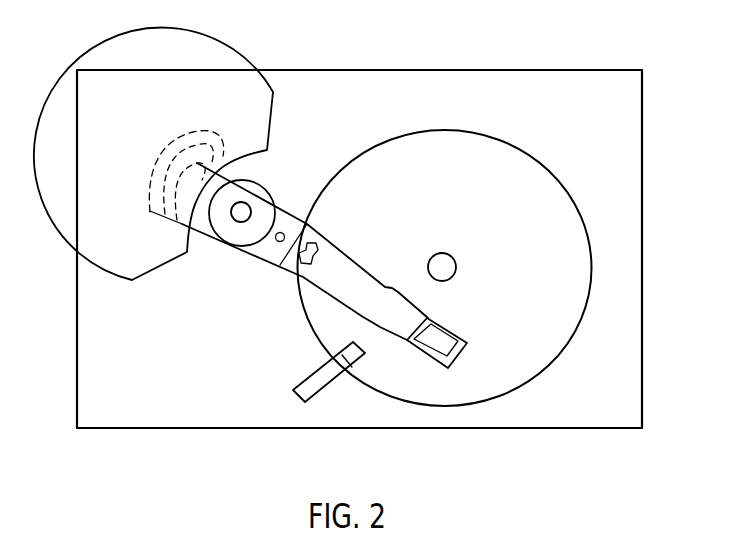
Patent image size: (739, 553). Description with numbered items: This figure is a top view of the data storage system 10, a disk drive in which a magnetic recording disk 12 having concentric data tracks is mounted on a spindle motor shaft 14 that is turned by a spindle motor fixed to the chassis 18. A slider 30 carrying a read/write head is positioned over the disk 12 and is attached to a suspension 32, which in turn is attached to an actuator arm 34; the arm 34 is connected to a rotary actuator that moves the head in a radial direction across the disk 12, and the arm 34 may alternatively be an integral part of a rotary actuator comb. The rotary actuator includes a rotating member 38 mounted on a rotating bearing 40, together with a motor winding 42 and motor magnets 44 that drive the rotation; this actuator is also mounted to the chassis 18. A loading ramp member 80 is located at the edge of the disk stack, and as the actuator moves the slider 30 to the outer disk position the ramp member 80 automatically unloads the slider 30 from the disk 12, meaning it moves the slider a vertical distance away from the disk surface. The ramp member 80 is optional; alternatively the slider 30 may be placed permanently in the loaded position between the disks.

The data storage system 10 is at (186, 452).
The magnetic recording disk 12 is at (451, 178).
The spindle motor shaft 14 is at (452, 256).
The chassis 18 is at (603, 120).
The slider 30 is at (458, 362).
The suspension 32 is at (331, 263).
The actuator arm 34 is at (281, 233).
The rotating member 38 is at (240, 233).
The rotating bearing 40 is at (237, 203).
The motor winding 42 is at (150, 211).
The motor magnets 44 is at (243, 123).
The loading ramp member 80 is at (308, 377).